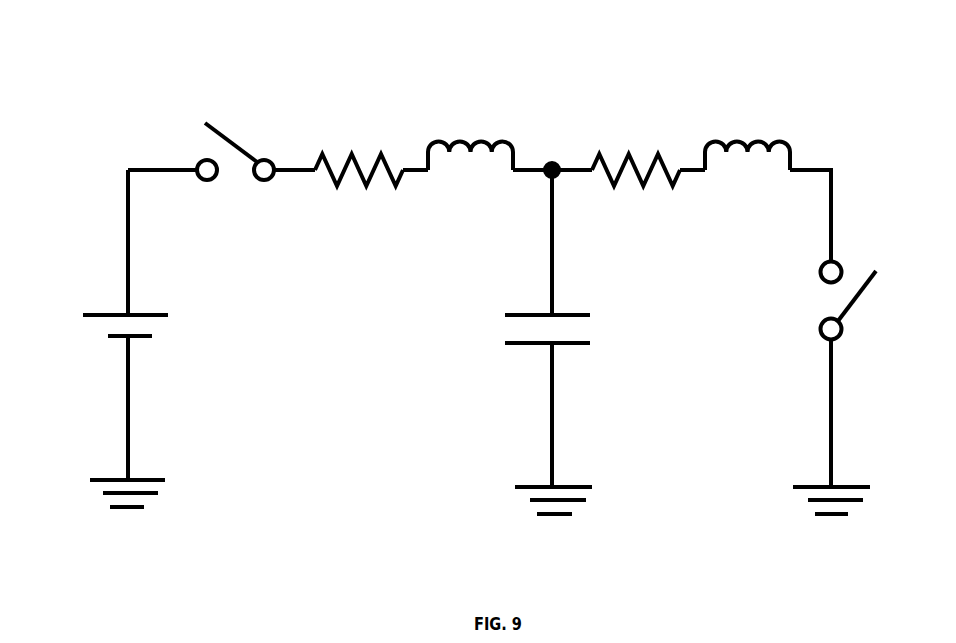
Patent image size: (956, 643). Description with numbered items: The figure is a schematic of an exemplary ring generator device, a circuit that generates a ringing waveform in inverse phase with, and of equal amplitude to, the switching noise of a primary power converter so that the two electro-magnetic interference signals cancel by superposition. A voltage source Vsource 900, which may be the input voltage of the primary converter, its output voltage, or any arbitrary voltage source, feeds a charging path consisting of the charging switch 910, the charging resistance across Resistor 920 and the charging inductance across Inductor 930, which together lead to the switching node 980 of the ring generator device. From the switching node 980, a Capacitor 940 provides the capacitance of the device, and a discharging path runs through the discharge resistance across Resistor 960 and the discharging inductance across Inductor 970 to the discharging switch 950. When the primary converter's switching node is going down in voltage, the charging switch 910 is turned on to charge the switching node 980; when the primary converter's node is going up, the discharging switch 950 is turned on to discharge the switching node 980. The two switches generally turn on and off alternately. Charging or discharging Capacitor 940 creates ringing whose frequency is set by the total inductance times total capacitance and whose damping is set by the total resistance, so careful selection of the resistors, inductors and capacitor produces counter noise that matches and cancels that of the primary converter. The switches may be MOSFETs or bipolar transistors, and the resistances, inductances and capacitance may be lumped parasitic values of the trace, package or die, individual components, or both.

The Vsource 900 is at (99, 325).
The charging switch 910 is at (236, 181).
The Resistor 920 is at (357, 196).
The Inductor 930 is at (468, 190).
The Capacitor 940 is at (504, 358).
The discharging switch 950 is at (807, 305).
The Resistor 960 is at (636, 203).
The Inductor 970 is at (754, 196).
The switching node 980 is at (552, 150).